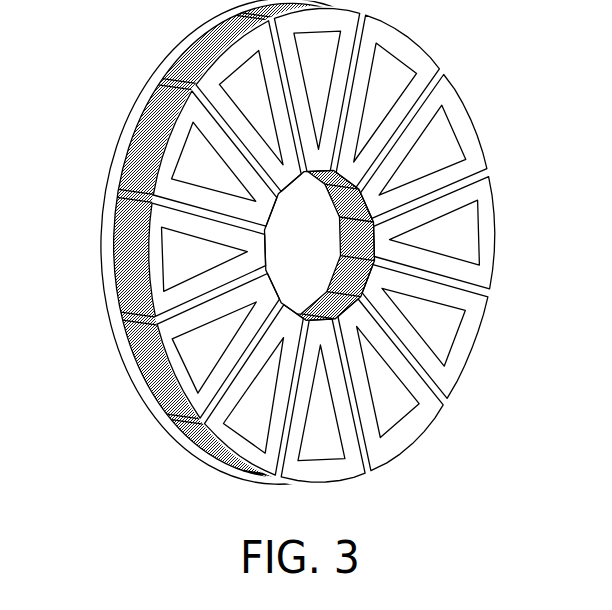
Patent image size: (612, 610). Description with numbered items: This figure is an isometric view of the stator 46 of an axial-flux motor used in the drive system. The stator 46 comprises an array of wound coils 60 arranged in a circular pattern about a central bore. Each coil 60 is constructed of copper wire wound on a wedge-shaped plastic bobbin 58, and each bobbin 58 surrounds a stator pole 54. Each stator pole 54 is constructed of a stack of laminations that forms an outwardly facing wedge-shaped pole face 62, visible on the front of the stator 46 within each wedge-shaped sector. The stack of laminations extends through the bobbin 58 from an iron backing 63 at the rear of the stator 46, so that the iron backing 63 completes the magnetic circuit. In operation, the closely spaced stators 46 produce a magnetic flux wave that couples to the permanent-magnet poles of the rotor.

The stator 46 is at (105, 80).
The stator pole 54 is at (447, 325).
The bobbin 58 is at (468, 345).
The coil 60 is at (218, 470).
The pole face 62 is at (448, 148).
The iron backing 63 is at (135, 398).